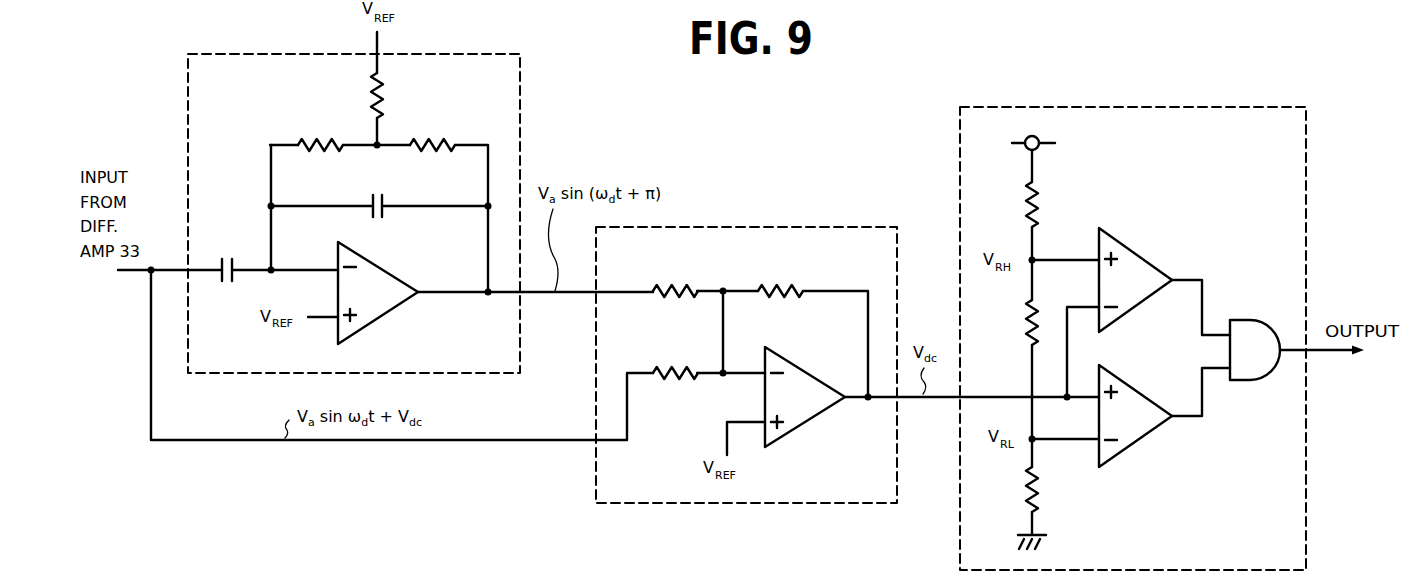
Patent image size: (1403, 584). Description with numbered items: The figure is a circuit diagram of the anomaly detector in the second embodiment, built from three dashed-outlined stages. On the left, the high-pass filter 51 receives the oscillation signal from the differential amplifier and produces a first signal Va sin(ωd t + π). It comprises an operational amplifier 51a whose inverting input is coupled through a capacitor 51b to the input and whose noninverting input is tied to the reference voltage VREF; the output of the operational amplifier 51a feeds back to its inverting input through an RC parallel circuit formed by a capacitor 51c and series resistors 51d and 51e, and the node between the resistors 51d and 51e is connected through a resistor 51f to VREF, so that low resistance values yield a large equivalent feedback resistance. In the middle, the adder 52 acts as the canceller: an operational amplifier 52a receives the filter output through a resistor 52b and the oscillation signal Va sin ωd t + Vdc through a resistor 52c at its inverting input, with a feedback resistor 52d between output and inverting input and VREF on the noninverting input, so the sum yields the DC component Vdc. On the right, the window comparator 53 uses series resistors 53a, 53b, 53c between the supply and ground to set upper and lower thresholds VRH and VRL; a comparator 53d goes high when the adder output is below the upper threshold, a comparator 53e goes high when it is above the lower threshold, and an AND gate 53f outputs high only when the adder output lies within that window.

The high-pass filter 51 is at (466, 54).
The operational amplifier 51a is at (393, 308).
The capacitor 51b is at (224, 257).
The capacitor 51c is at (374, 199).
The resistor 51d is at (317, 143).
The resistor 51e is at (431, 143).
The resistor 51f is at (383, 95).
The adder 52 is at (728, 226).
The operational amplifier 52a is at (797, 428).
The resistor 52b is at (663, 285).
The resistor 52c is at (663, 370).
The feedback resistor 52d is at (783, 285).
The window comparator 53 is at (1132, 113).
The resistor 53a is at (1027, 217).
The resistor 53b is at (1027, 325).
The resistor 53c is at (1027, 494).
The comparator 53d is at (1127, 244).
The comparator 53e is at (1131, 388).
The AND gate 53f is at (1243, 319).